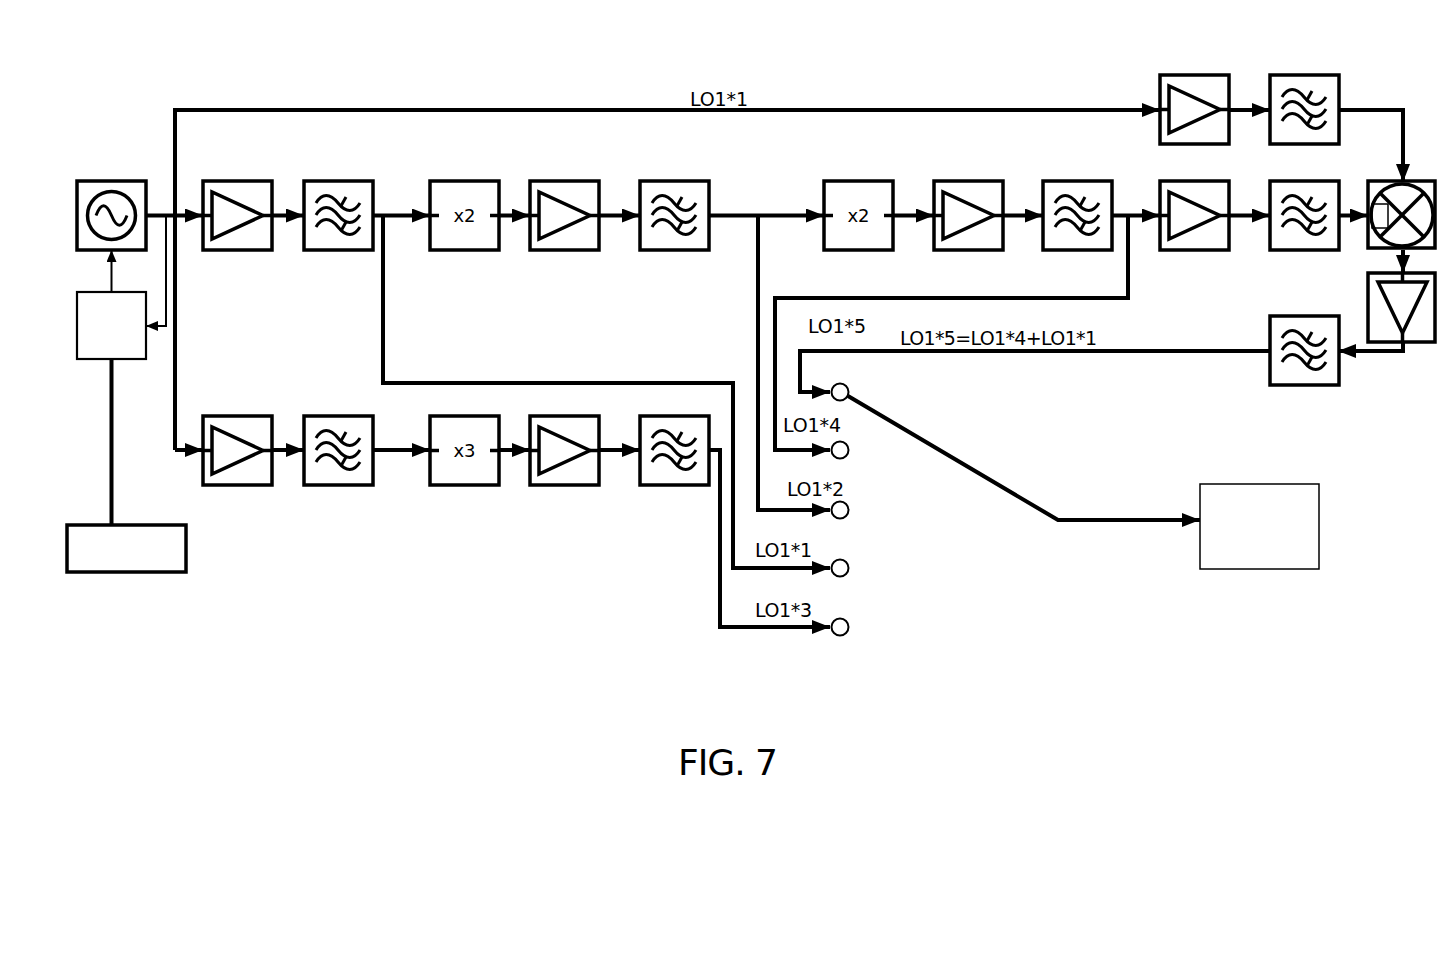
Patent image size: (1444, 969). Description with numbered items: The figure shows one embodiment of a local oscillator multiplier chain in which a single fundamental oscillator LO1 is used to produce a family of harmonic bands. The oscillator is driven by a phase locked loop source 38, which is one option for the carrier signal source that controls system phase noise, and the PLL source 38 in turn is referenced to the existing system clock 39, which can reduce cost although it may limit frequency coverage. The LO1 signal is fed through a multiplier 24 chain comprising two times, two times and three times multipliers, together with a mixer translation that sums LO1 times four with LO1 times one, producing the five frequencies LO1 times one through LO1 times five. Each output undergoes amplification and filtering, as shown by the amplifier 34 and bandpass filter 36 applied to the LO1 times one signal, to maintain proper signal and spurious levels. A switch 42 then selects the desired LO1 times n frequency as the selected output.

The multiplier 24 is at (112, 180).
The amplifier 34 is at (238, 180).
The bandpass filter 36 is at (340, 180).
The phase locked loop source 38 is at (150, 319).
The system clock 39 is at (188, 547).
The switch 42 is at (1260, 484).